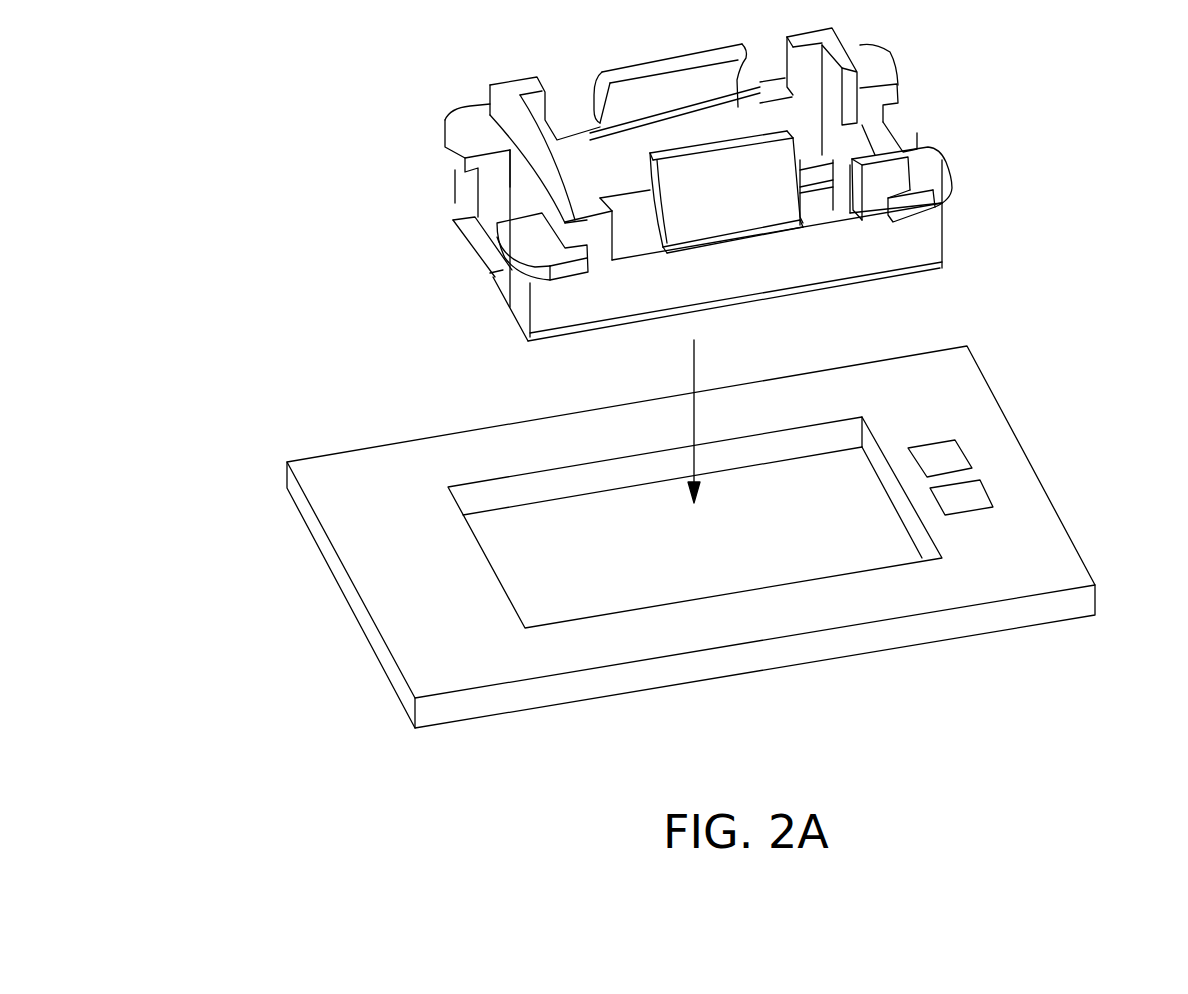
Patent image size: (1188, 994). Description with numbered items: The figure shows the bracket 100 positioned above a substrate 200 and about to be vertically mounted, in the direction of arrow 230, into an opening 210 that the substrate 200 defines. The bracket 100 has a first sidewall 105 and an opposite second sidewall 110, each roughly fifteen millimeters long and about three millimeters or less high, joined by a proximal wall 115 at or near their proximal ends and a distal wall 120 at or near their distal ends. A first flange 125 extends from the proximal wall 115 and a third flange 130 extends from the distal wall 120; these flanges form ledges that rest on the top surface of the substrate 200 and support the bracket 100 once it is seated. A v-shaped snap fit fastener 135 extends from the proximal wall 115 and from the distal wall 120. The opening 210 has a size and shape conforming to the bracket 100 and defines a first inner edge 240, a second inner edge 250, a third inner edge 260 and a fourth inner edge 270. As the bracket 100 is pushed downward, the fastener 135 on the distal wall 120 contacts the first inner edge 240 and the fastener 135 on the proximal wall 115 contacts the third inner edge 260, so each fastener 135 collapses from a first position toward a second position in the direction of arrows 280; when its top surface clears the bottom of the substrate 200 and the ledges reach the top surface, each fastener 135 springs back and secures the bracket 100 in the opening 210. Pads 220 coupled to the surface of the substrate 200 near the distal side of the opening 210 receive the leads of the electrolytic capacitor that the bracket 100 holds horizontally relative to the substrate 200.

The bracket 100 is at (396, 96).
The first sidewall 105 is at (568, 115).
The second sidewall 110 is at (943, 267).
The proximal wall 115 is at (853, 45).
The distal wall 120 is at (490, 90).
The first flange 125 is at (952, 180).
The third flange 130 is at (445, 128).
The fastener 135 is at (458, 247).
The substrate 200 is at (287, 492).
The opening 210 is at (560, 598).
The pads 220 is at (988, 492).
The arrow 230 is at (693, 368).
The first inner edge 240 is at (480, 538).
The second inner edge 250 is at (630, 492).
The third inner edge 260 is at (882, 488).
The fourth inner edge 270 is at (730, 592).
The arrows 280 is at (962, 134).